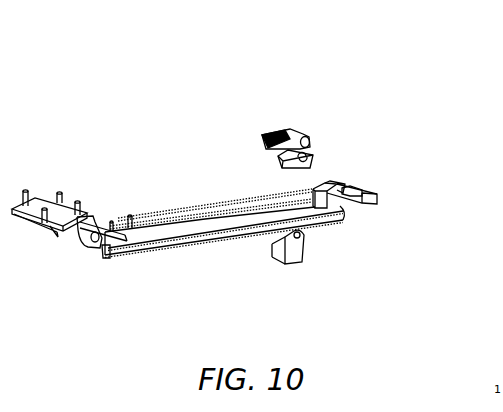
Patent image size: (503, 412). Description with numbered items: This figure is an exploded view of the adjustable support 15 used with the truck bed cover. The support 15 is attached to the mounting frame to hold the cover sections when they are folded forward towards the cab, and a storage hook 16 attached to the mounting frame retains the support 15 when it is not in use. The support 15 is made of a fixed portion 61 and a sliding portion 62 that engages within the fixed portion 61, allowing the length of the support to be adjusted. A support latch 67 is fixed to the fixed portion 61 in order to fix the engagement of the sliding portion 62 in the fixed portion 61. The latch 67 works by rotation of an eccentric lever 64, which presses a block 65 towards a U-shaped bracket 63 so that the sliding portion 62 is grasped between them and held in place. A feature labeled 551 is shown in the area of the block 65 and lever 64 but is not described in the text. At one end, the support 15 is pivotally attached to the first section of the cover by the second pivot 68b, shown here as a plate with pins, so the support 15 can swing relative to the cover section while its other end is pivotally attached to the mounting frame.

The adjustable support 15 is at (159, 92).
The storage hook 16 is at (340, 208).
The fixed portion 61 is at (220, 215).
The sliding portion 62 is at (250, 231).
The U-shaped bracket 63 is at (296, 245).
The eccentric lever 64 is at (285, 137).
The block 65 is at (313, 165).
The support latch 67 is at (298, 119).
The slot 551 is at (311, 152).
The second pivot 68b is at (55, 234).